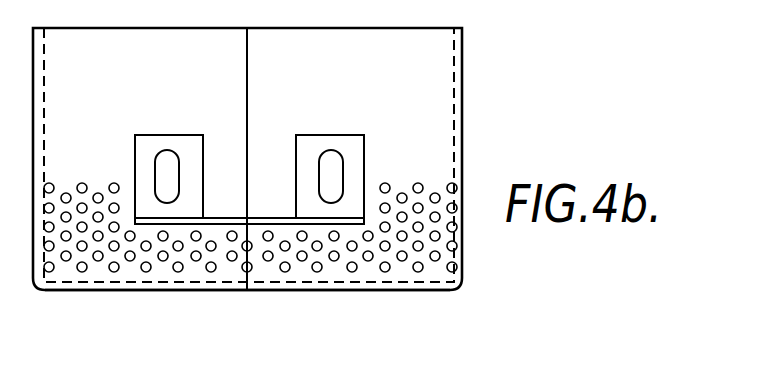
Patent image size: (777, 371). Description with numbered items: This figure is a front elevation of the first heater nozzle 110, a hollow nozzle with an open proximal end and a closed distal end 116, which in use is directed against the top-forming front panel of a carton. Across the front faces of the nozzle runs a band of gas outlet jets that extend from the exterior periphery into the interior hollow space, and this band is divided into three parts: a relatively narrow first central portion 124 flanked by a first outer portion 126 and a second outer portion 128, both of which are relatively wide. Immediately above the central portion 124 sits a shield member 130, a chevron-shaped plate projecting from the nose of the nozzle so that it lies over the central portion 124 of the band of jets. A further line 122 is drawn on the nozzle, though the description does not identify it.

The first heater nozzle 110 is at (464, 75).
The closed distal end 116 is at (312, 296).
The liner 122 is at (464, 247).
The first central portion 124 is at (348, 296).
The first outer portion 126 is at (121, 296).
The second outer portion 128 is at (458, 296).
The shield member 130 is at (340, 210).